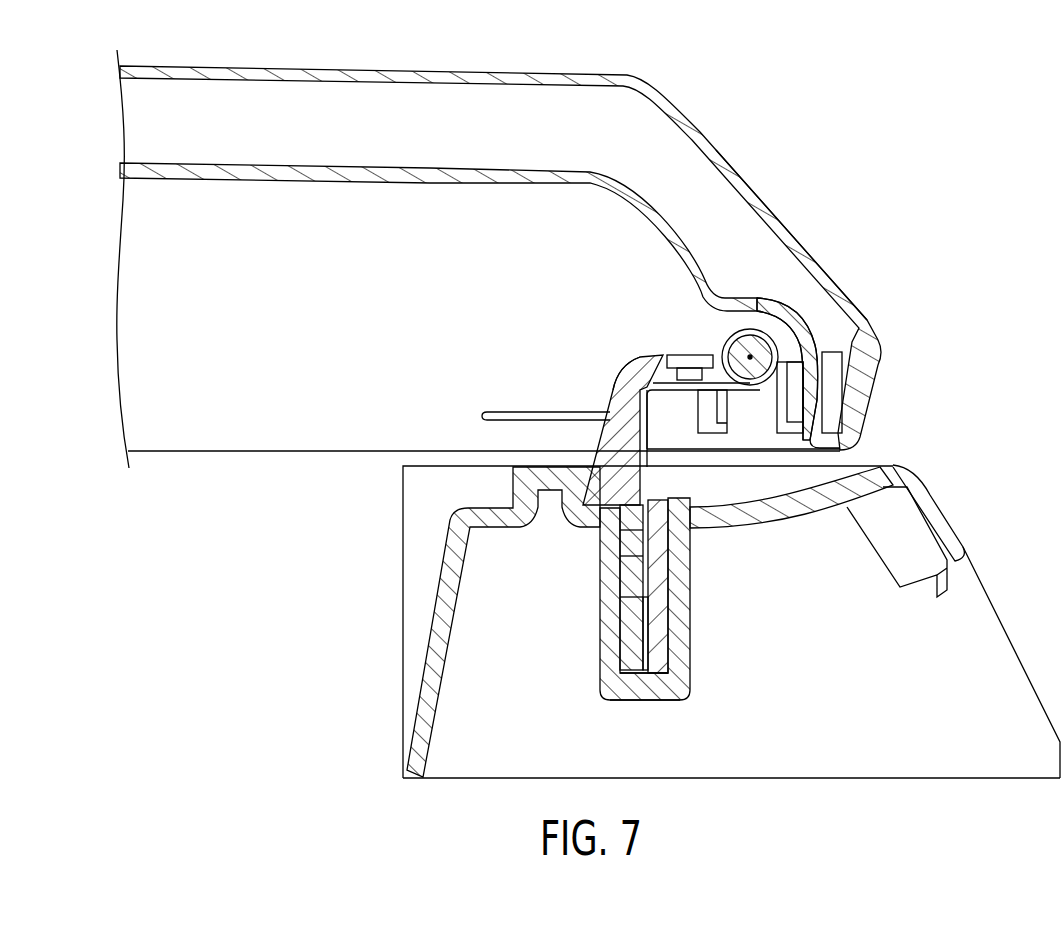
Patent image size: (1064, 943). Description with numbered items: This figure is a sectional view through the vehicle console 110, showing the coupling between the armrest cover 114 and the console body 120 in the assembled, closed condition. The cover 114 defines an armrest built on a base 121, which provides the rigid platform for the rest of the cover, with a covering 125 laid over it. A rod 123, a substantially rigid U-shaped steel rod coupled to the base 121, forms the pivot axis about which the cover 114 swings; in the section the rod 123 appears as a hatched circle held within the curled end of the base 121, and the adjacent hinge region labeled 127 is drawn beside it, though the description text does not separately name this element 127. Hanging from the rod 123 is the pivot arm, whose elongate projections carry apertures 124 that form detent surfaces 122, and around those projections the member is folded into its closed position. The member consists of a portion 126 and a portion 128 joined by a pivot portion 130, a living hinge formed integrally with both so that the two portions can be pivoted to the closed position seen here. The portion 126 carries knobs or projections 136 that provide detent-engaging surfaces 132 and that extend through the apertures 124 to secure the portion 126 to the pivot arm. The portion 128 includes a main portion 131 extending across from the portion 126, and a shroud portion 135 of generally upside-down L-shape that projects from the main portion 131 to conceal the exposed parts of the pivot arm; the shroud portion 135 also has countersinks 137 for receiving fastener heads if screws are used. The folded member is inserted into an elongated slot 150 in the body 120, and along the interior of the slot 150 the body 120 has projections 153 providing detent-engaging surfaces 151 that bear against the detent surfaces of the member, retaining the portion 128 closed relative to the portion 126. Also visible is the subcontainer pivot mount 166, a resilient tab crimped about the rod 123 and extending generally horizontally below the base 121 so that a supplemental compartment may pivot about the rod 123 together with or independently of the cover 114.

The vehicle console 110 is at (950, 174).
The cover 114 is at (700, 122).
The body 120 is at (945, 504).
The base 121 is at (680, 254).
The detent surfaces 122 is at (690, 606).
The rod 123 is at (755, 333).
The apertures 124 is at (640, 613).
The covering 125 is at (780, 220).
The portion 126 is at (682, 551).
The hinge knuckle 127 is at (772, 324).
The portion 128 is at (606, 459).
The pivot portion 130 is at (645, 681).
The main portion 131 is at (633, 538).
The detent-engaging surfaces 132 is at (647, 558).
The shroud portion 135 is at (611, 386).
The projections 136 is at (643, 588).
The countersinks 137 is at (680, 352).
The slot 150 is at (692, 592).
The detent-engaging surfaces 151 is at (623, 670).
The projections 153 is at (633, 623).
The subcontainer pivot mount 166 is at (535, 410).